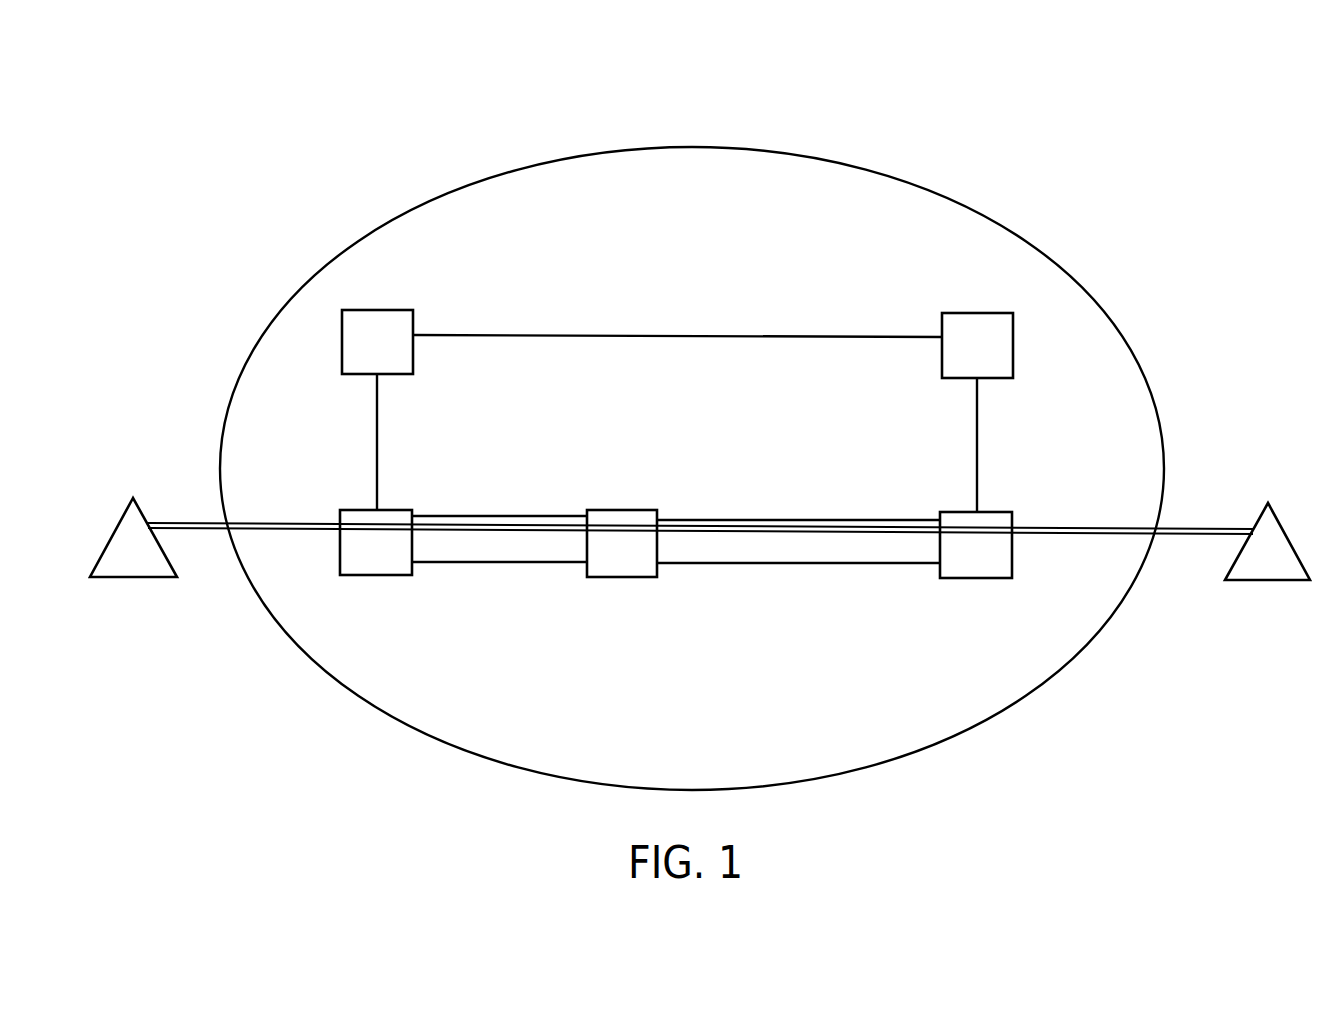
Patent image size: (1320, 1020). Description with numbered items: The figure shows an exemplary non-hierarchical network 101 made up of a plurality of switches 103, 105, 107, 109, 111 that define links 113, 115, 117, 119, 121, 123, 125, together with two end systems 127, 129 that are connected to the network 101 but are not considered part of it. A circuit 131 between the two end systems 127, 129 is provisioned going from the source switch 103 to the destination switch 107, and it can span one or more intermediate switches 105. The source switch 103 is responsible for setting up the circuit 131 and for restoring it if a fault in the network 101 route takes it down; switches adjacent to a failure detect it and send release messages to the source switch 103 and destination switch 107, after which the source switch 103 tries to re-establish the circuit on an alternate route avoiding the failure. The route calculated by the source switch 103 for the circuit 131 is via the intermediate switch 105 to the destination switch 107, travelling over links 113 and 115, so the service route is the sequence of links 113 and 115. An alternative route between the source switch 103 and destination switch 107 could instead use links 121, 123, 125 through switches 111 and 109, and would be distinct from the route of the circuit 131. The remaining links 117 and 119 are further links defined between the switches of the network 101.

The non-hierarchical network 101 is at (667, 147).
The source switch 103 is at (360, 576).
The intermediate switch 105 is at (642, 510).
The destination switch 107 is at (962, 579).
The switch 109 is at (967, 313).
The switch 111 is at (393, 310).
The link 113 is at (510, 516).
The link 115 is at (800, 520).
The link 117 is at (507, 563).
The link 119 is at (823, 563).
The link 121 is at (375, 422).
The link 123 is at (733, 335).
The link 125 is at (977, 393).
The end system 127 is at (133, 578).
The end system 129 is at (1258, 581).
The circuit 131 is at (1047, 528).